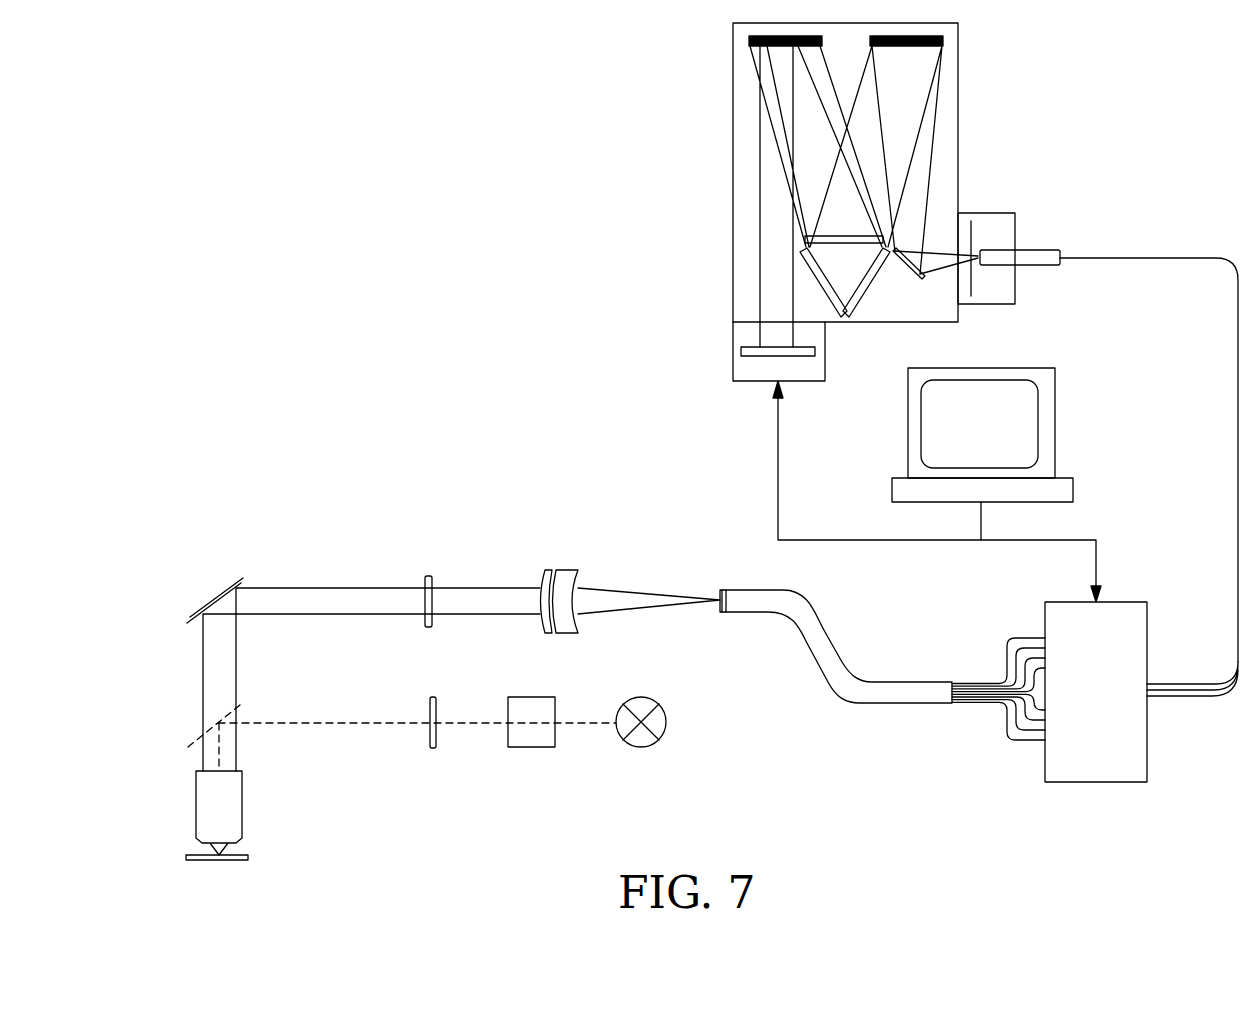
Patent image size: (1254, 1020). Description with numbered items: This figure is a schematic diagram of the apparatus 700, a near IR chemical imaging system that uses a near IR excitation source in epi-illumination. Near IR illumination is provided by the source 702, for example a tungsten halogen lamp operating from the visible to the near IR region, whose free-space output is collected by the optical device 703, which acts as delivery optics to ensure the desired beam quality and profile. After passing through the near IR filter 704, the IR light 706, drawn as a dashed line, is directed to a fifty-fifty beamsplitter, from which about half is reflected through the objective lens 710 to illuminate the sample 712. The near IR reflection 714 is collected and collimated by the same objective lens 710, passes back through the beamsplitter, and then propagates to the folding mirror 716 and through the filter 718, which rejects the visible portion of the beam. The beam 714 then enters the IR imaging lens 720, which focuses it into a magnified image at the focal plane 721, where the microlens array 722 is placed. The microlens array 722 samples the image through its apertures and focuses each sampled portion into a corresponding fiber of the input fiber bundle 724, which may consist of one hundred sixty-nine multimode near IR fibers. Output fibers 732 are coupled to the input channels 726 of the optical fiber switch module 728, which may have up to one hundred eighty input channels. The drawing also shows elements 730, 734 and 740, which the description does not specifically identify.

The apparatus 700 is at (408, 197).
The source 702 is at (641, 748).
The optical device 703 is at (531, 748).
The near IR filter 704 is at (432, 749).
The IR light 706 is at (383, 724).
The objective lens 710 is at (196, 806).
The sample 712 is at (186, 856).
The near IR reflection 714 is at (203, 683).
The folding mirror 716 is at (214, 590).
The filter 718 is at (428, 575).
The IR imaging lens 720 is at (566, 568).
The focal plane 721 is at (719, 620).
The microlens array 722 is at (722, 589).
The input fiber bundle 724 is at (816, 610).
The input channels 726 is at (1027, 635).
The optical fiber switch module 728 is at (1095, 782).
The output cable 730 is at (1200, 682).
The output fibers 732 is at (1236, 510).
The detector 734 is at (1052, 249).
The computer 740 is at (1060, 420).